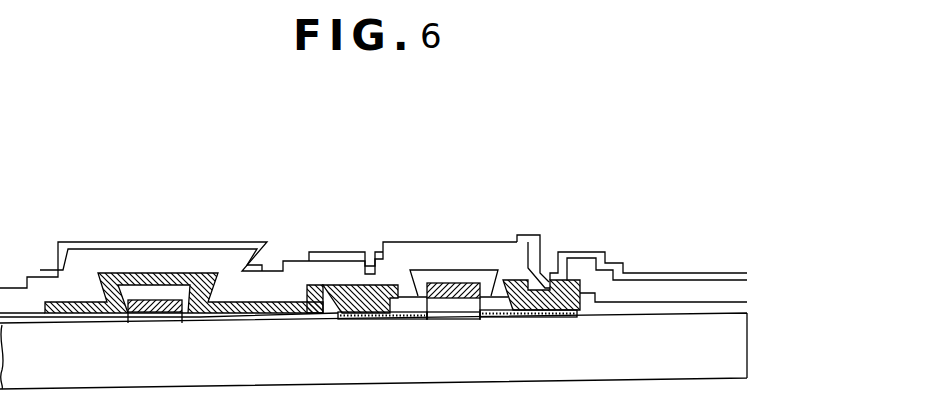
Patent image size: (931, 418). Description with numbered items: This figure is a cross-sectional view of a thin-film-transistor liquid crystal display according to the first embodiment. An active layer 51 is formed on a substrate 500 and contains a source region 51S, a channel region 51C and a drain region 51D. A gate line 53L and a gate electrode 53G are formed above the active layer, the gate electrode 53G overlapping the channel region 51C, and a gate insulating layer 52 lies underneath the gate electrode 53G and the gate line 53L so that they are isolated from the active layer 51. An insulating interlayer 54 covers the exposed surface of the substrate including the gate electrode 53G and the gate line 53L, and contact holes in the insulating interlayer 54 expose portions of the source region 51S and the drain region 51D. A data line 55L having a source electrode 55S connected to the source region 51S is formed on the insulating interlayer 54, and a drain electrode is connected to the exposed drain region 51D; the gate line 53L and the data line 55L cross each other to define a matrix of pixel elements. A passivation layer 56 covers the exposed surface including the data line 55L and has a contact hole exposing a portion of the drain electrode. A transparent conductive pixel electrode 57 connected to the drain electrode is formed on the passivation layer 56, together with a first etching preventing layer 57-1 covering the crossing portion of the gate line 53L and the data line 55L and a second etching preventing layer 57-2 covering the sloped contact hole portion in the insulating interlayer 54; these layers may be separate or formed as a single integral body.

The substrate 500 is at (747, 343).
The active layer 51 is at (482, 341).
The source region 51S is at (373, 314).
The channel region 51C is at (448, 313).
The drain region 51D is at (525, 313).
The gate insulating layer 52 is at (160, 321).
The gate line 53L is at (177, 315).
The gate electrode 53G is at (432, 283).
The insulating interlayer 54 is at (302, 314).
The data line 55L is at (126, 272).
The source electrode 55S is at (338, 283).
The passivation layer 56 is at (225, 257).
The pixel electrode 57 is at (541, 235).
The first etching preventing layer 57-1 is at (77, 247).
The second etching preventing layer 57-2 is at (322, 252).